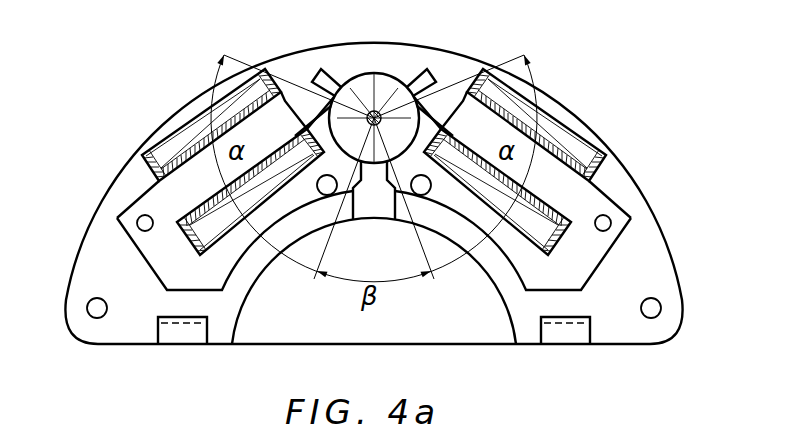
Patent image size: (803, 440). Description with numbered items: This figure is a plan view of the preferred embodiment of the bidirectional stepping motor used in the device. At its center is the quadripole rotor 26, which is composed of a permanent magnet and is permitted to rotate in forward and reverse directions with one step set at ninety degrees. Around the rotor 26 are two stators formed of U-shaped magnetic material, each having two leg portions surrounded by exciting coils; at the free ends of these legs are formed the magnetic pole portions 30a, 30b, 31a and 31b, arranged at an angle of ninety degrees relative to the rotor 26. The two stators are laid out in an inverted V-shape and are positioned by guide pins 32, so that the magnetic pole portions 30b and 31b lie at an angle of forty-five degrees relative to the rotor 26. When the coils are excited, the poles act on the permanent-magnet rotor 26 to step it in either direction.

The quadripole rotor 26 is at (373, 72).
The magnetic pole portion 30a is at (328, 90).
The magnetic pole portion 30b is at (356, 212).
The magnetic pole portion 31a is at (421, 90).
The magnetic pole portion 31b is at (392, 212).
The guide pins 32 is at (608, 232).